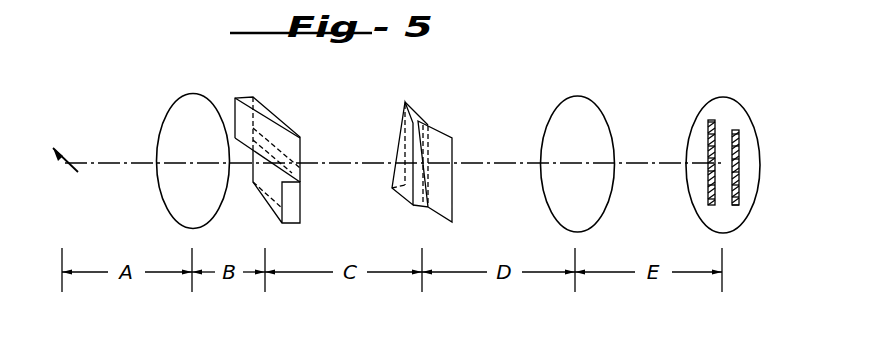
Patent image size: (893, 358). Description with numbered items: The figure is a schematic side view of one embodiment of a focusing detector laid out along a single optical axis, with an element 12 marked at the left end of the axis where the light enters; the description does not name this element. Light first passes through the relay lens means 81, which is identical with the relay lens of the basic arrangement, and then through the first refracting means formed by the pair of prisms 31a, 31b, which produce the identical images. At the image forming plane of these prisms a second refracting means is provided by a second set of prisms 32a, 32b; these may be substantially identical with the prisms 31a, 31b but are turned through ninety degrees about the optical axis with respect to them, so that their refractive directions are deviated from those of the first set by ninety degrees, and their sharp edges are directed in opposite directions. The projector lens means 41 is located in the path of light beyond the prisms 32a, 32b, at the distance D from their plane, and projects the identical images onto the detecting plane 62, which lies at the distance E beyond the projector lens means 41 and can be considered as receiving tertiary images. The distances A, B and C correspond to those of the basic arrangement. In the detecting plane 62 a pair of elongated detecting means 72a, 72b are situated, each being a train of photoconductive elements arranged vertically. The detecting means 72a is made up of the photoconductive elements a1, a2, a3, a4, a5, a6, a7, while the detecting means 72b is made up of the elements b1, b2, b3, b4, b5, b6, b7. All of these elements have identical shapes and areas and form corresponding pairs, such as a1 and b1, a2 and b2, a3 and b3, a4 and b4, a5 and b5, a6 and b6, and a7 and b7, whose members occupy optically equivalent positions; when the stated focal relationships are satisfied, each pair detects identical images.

The point light source 12 is at (65, 163).
The relay lens means 81 is at (197, 103).
The prism 31a is at (272, 118).
The prism 31b is at (295, 205).
The prism 32a is at (417, 110).
The prism 32b is at (440, 136).
The projector lens means 41 is at (595, 118).
The detecting plane 62 is at (733, 98).
The detecting means 72a is at (730, 207).
The detecting means 72b is at (710, 207).
The photoconductive element a1 is at (739, 205).
The photoconductive element a2 is at (739, 197).
The photoconductive element a3 is at (739, 185).
The photoconductive element a4 is at (739, 172).
The photoconductive element a5 is at (739, 159).
The photoconductive element a6 is at (739, 146).
The photoconductive element a7 is at (739, 134).
The photoconductive element b1 is at (708, 199).
The photoconductive element b2 is at (708, 185).
The photoconductive element b3 is at (708, 171).
The photoconductive element b4 is at (708, 158).
The photoconductive element b5 is at (708, 146).
The photoconductive element b6 is at (708, 134).
The photoconductive element b7 is at (708, 124).